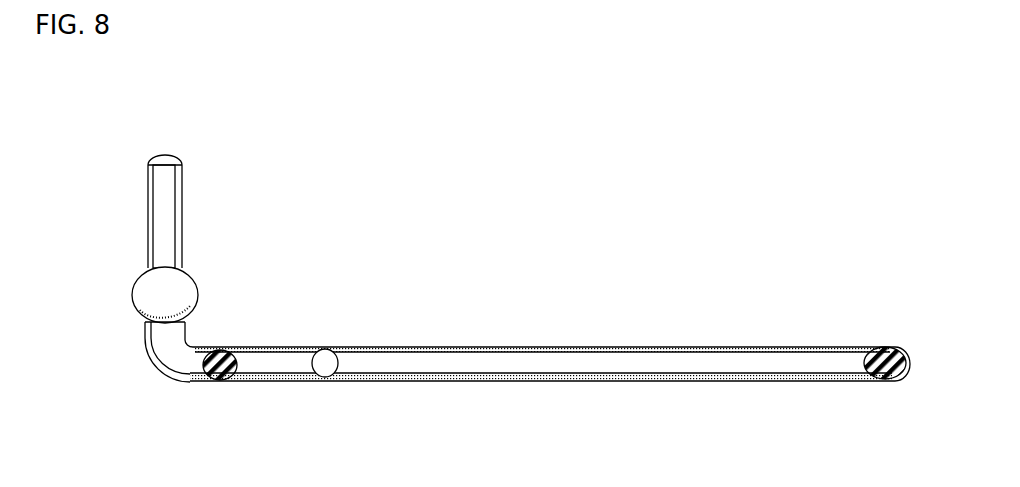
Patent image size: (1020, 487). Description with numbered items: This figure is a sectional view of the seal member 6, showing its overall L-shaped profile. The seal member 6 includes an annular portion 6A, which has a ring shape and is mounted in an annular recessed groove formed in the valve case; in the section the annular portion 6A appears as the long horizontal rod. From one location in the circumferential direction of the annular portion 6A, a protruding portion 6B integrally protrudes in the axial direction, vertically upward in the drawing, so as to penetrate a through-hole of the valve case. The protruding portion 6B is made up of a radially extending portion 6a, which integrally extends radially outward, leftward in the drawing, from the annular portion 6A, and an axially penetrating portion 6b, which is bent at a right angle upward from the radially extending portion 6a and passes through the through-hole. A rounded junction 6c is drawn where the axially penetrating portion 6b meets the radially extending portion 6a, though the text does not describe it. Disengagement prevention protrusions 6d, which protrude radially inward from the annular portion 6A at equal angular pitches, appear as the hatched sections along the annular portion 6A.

The seal member 6 is at (598, 258).
The annular portion 6A is at (713, 347).
The protruding portion 6B is at (186, 218).
The radially extending portion 6a is at (186, 384).
The axially penetrating portion 6b is at (148, 218).
The spherical portion 6c is at (183, 282).
The disengagement prevention protrusion 6d is at (331, 378).